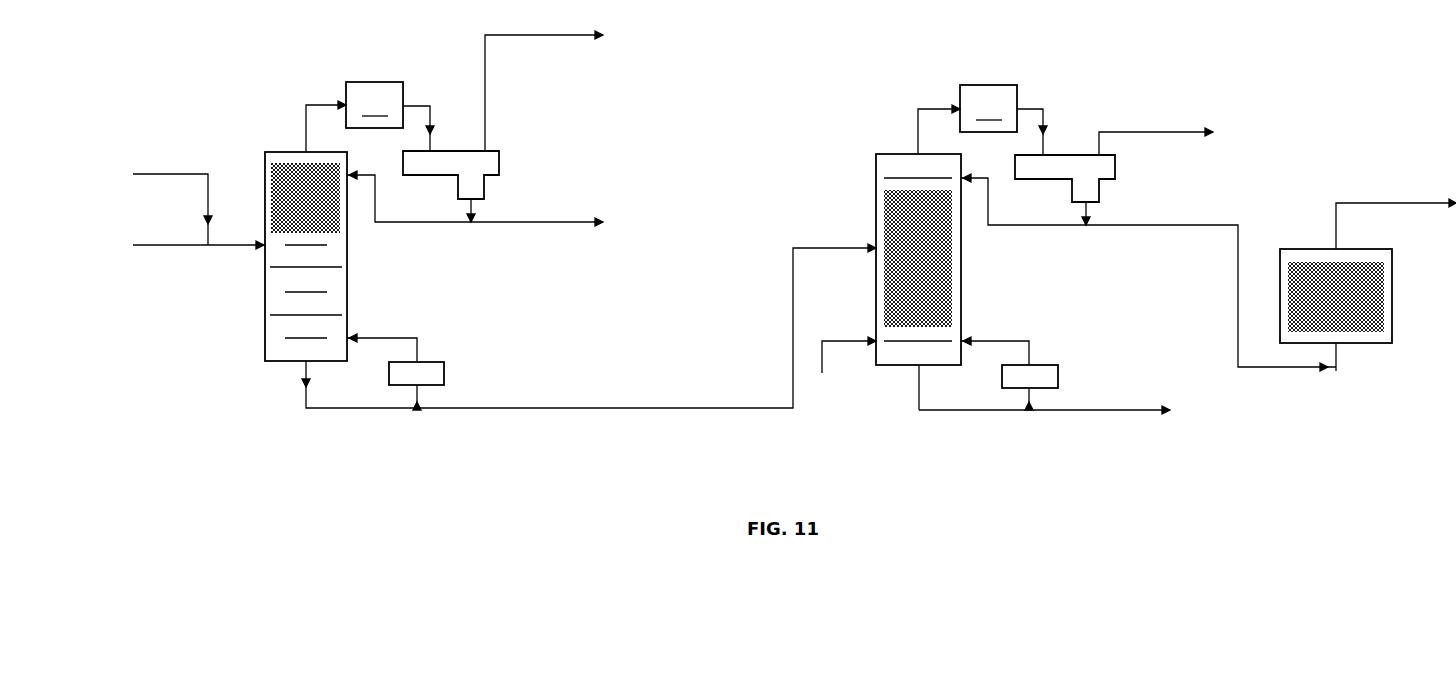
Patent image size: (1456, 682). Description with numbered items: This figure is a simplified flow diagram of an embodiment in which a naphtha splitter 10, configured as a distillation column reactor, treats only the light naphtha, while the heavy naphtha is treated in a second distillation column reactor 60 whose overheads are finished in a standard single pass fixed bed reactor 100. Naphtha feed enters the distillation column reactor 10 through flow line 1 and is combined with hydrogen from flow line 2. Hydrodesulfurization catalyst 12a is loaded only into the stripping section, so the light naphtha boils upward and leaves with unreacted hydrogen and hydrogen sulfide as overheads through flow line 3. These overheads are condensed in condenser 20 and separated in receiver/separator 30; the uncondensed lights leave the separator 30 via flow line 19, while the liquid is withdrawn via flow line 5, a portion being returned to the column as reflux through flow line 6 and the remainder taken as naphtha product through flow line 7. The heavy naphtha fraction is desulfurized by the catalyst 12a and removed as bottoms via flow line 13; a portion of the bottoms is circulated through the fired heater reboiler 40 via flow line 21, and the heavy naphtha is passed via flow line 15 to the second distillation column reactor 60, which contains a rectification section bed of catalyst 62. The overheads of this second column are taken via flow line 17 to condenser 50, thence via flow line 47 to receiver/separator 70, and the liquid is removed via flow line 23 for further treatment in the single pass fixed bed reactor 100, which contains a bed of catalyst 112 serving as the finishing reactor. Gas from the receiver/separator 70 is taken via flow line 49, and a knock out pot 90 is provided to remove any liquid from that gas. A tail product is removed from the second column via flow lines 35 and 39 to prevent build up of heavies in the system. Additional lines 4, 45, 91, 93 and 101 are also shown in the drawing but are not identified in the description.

The flow line 1 is at (167, 243).
The flow line 2 is at (163, 178).
The flow line 3 is at (305, 103).
The condensed overhead line 4 is at (430, 118).
The flow line 5 is at (467, 215).
The flow line 6 is at (412, 222).
The flow line 7 is at (575, 222).
The naphtha splitter 10 is at (282, 151).
The catalyst 12a is at (280, 196).
The flow line 13 is at (382, 411).
The flow line 15 is at (553, 409).
The flow line 17 is at (918, 105).
The flow line 19 is at (486, 97).
The condenser 20 is at (374, 105).
The flow line 21 is at (422, 396).
The flow line 23 is at (1150, 227).
The receiver/separator 30 is at (481, 165).
The flow line 35 is at (919, 385).
The flow line 39 is at (992, 412).
The fired heater reboiler 40 is at (437, 370).
The reflux line 45 is at (1020, 226).
The flow line 47 is at (1043, 128).
The flow line 49 is at (1180, 130).
The condenser 50 is at (988, 108).
The second distillation column reactor 60 is at (890, 152).
The rectification section bed 62 is at (905, 219).
The receiver/separator 70 is at (1088, 170).
The knock out pot 90 is at (1051, 378).
The reboiler return line 91 is at (1030, 348).
The product outlet line 93 is at (1380, 203).
The single pass fixed bed reactor 100 is at (1318, 249).
The hydrogen feed line 101 is at (818, 343).
The bed of catalyst 112 is at (1340, 367).